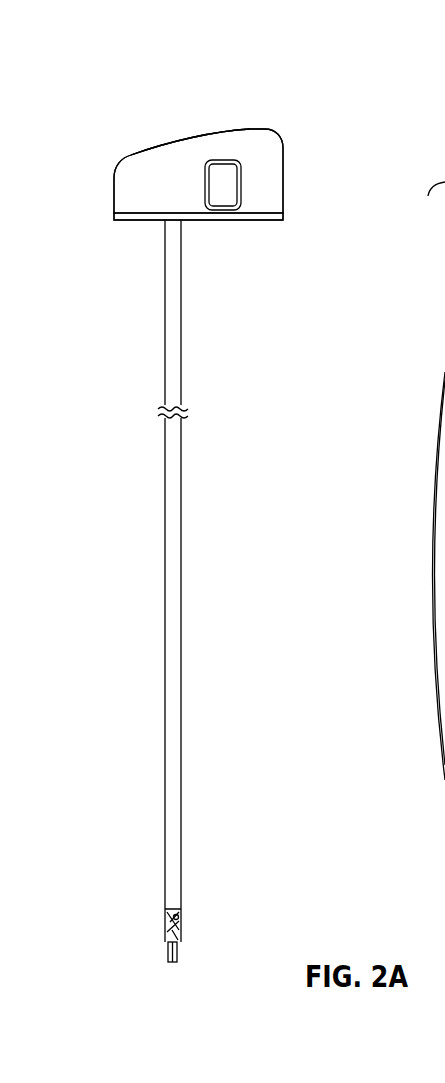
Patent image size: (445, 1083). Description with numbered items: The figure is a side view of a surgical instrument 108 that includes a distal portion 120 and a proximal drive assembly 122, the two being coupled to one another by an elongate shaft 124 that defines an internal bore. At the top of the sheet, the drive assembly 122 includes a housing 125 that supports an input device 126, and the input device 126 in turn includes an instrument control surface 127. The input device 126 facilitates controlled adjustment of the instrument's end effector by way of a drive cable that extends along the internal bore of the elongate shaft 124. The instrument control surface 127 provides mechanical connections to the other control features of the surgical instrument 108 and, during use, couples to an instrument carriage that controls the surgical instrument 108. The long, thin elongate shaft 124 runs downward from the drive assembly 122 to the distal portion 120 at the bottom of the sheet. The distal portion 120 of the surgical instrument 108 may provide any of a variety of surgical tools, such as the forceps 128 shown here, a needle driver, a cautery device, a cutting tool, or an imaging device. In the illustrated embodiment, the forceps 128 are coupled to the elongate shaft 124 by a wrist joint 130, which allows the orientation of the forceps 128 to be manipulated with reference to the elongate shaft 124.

The surgical instrument 108 is at (304, 146).
The distal portion 120 is at (139, 924).
The proximal drive assembly 122 is at (155, 133).
The elongate shaft 124 is at (182, 666).
The housing 125 is at (233, 128).
The input device 126 is at (125, 231).
The instrument control surface 127 is at (254, 221).
The forceps 128 is at (181, 952).
The wrist joint 130 is at (184, 930).